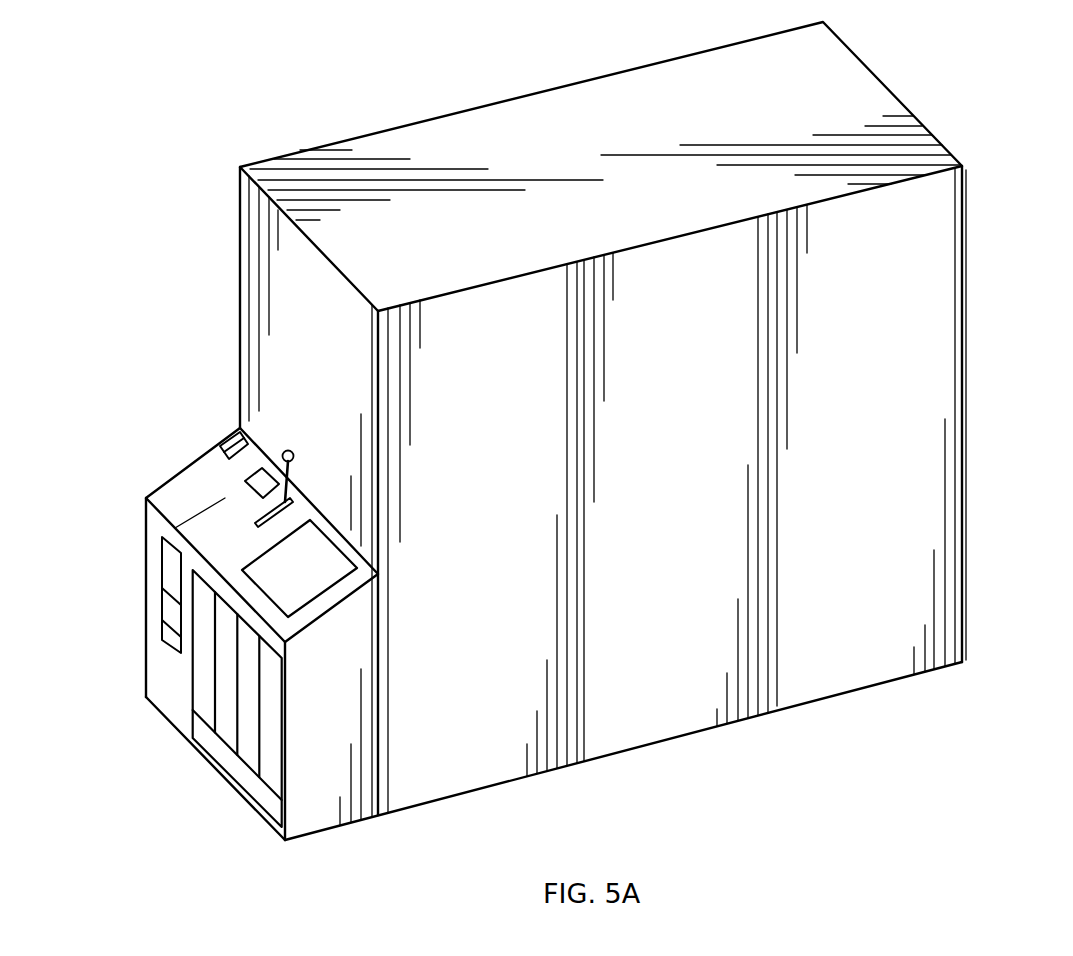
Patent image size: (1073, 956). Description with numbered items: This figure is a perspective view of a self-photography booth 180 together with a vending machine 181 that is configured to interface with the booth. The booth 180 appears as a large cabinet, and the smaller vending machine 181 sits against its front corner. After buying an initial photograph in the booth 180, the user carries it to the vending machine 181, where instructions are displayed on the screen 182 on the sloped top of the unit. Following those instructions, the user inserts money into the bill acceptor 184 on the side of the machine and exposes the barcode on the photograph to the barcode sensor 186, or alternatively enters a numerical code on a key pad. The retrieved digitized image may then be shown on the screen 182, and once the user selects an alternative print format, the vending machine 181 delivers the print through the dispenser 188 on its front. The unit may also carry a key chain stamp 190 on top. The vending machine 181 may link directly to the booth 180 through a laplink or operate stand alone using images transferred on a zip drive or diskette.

The self-photography booth 180 is at (953, 251).
The vending machine 181 is at (330, 815).
The screen 182 is at (270, 562).
The bill acceptor 184 is at (168, 567).
The barcode sensor 186 is at (223, 440).
The dispenser 188 is at (208, 738).
The key chain stamp 190 is at (258, 472).